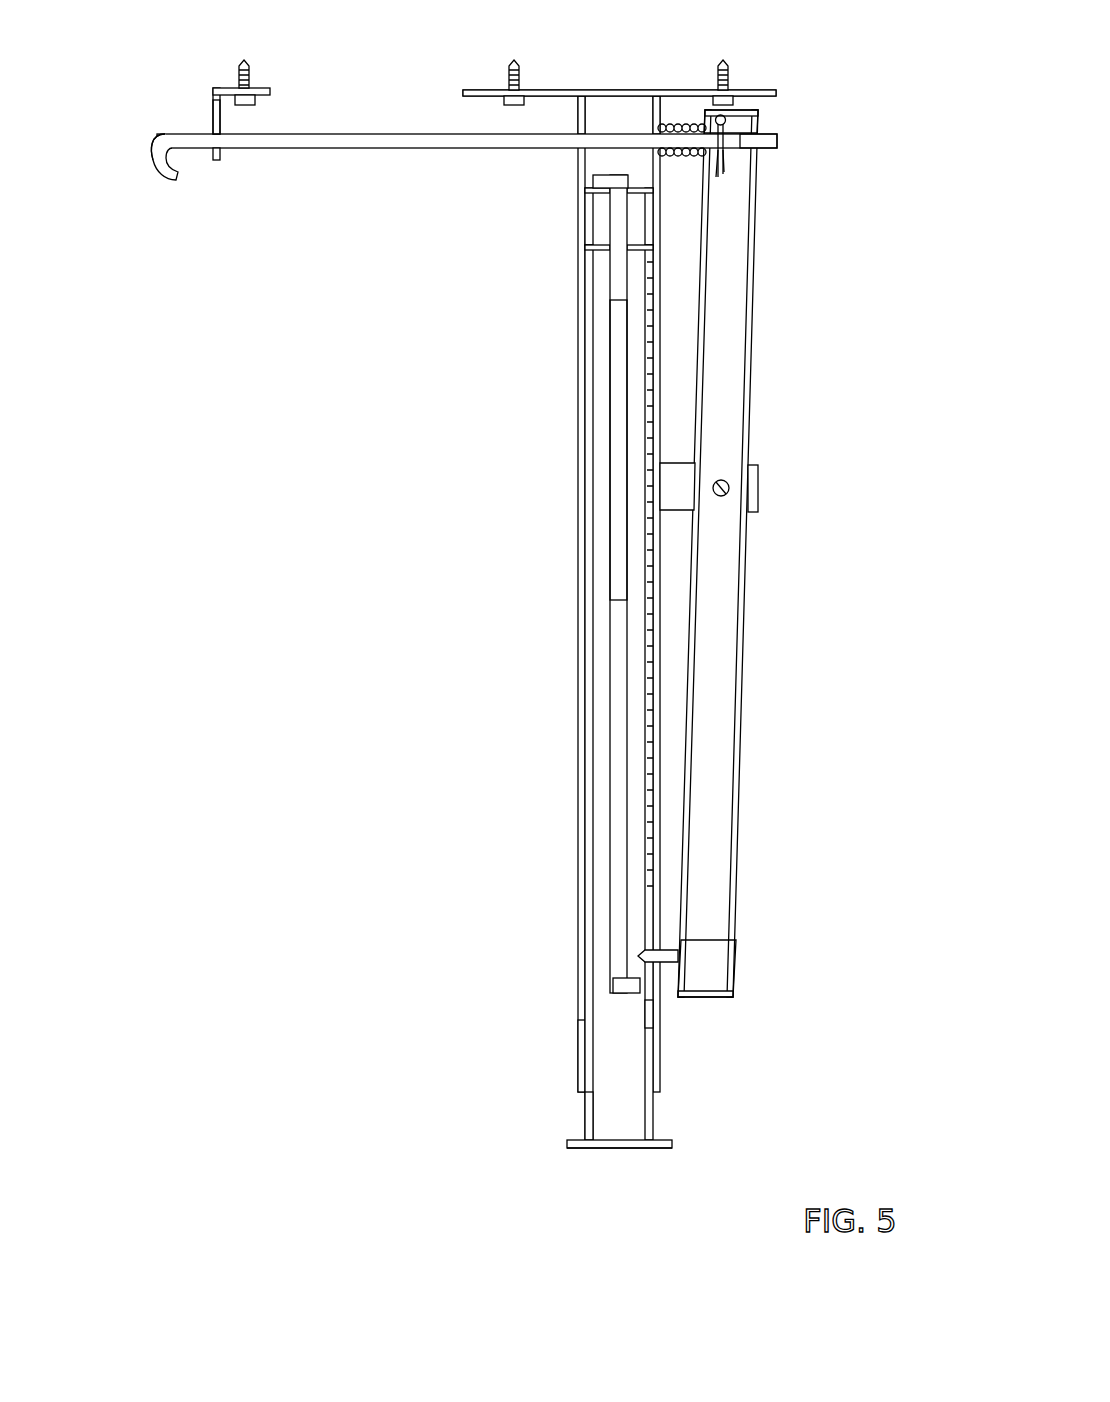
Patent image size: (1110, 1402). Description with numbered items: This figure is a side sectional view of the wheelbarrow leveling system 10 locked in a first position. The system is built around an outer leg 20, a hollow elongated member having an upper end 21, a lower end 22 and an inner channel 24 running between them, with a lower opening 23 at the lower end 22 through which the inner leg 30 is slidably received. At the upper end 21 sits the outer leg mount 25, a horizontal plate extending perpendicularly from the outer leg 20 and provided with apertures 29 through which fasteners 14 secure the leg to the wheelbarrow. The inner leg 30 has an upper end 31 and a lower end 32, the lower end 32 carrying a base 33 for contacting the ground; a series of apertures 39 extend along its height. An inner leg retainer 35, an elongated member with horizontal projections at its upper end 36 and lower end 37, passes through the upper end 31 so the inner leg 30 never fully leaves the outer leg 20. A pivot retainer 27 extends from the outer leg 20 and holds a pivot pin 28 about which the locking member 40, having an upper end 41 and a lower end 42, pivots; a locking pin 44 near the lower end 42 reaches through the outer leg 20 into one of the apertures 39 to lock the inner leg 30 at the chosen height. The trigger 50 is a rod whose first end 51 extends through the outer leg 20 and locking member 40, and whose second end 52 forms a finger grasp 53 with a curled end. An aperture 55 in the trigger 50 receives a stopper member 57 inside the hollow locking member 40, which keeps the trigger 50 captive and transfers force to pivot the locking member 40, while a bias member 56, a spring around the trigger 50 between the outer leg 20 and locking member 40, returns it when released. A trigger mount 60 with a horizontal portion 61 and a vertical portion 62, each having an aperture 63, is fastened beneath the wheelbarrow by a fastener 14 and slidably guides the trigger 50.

The wheelbarrow leveling system 10 is at (272, 1053).
The fasteners 14 is at (240, 80).
The outer leg 20 is at (578, 596).
The upper end 21 is at (577, 114).
The lower end 22 is at (578, 1080).
The lower opening 23 is at (588, 1098).
The inner channel 24 is at (604, 760).
The outer leg mount 25 is at (560, 92).
The pivot retainer 27 is at (760, 489).
The pivot pin 28 is at (726, 484).
The apertures 29 is at (505, 93).
The inner leg 30 is at (660, 1100).
The upper end 31 is at (597, 240).
The lower end 32 is at (668, 1128).
The base 33 is at (660, 1149).
The inner leg retainer 35 is at (614, 396).
The upper end 36 is at (600, 181).
The lower end 37 is at (640, 986).
The apertures 39 is at (645, 1020).
The locking member 40 is at (748, 678).
The upper end 41 is at (760, 118).
The lower end 42 is at (733, 985).
The locking pin 44 is at (638, 955).
The trigger 50 is at (365, 148).
The first end 51 is at (780, 140).
The second end 52 is at (172, 176).
The finger grasp 53 is at (158, 146).
The aperture 55 is at (726, 140).
The bias member 56 is at (685, 122).
The stopper member 57 is at (725, 170).
The trigger mount 60 is at (213, 102).
The horizontal portion 61 is at (265, 88).
The vertical portion 62 is at (222, 122).
The apertures 63 is at (216, 152).